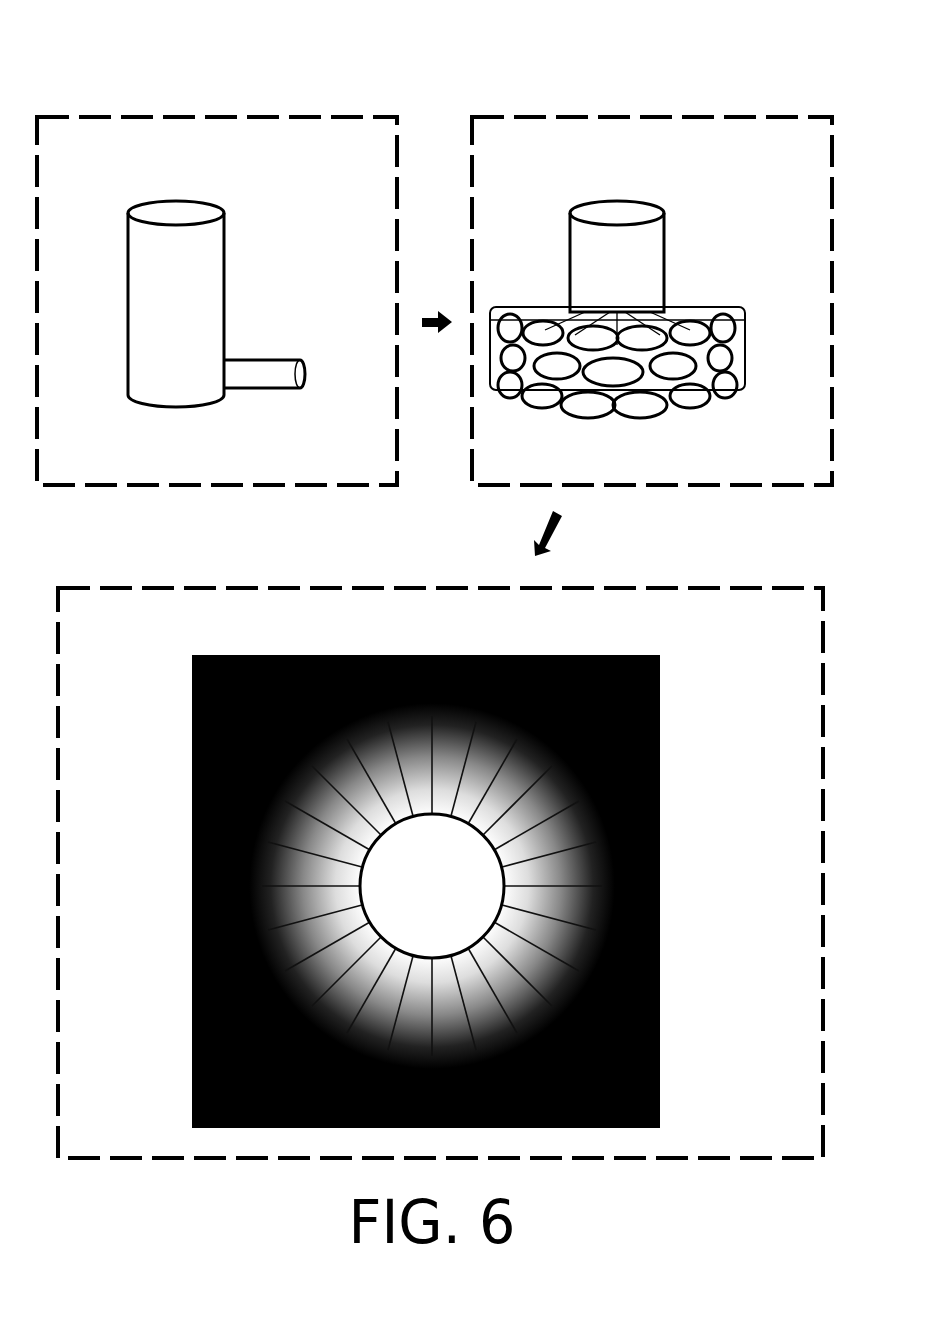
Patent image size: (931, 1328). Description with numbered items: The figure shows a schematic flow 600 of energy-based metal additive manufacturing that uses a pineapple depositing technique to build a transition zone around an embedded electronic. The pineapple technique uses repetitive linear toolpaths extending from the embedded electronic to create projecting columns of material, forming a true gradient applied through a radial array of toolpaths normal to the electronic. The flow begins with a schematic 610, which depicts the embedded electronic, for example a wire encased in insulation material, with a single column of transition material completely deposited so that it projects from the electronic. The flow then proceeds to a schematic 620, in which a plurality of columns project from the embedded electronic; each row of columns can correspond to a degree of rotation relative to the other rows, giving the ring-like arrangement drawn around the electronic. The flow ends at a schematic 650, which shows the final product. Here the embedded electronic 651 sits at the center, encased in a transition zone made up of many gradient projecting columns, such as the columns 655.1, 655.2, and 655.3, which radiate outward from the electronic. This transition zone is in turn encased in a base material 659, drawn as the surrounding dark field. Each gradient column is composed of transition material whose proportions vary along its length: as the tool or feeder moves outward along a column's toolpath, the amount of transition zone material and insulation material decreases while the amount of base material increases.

The schematic flow 600 is at (628, 112).
The schematic 610 is at (194, 464).
The schematic 620 is at (639, 464).
The schematic 650 is at (407, 631).
The embedded electronic 651 is at (451, 897).
The column 655.1 is at (662, 707).
The column 655.2 is at (662, 757).
The column 655.3 is at (662, 815).
The base material 659 is at (238, 653).